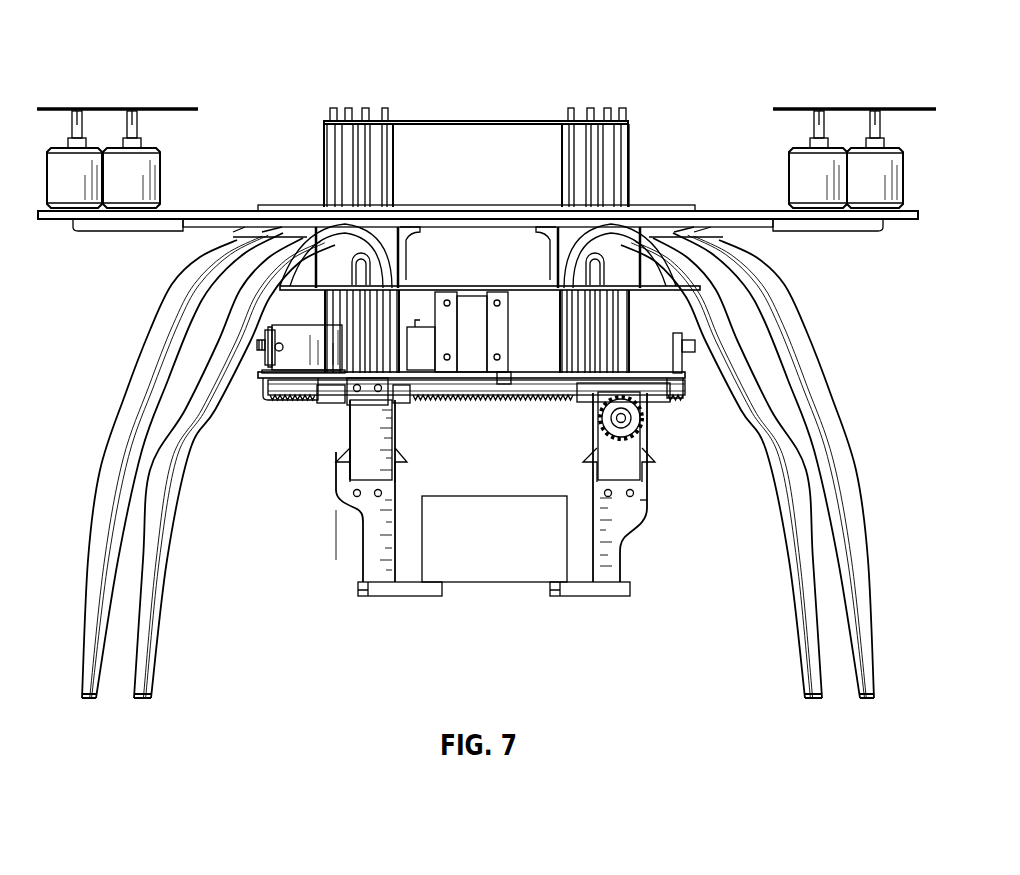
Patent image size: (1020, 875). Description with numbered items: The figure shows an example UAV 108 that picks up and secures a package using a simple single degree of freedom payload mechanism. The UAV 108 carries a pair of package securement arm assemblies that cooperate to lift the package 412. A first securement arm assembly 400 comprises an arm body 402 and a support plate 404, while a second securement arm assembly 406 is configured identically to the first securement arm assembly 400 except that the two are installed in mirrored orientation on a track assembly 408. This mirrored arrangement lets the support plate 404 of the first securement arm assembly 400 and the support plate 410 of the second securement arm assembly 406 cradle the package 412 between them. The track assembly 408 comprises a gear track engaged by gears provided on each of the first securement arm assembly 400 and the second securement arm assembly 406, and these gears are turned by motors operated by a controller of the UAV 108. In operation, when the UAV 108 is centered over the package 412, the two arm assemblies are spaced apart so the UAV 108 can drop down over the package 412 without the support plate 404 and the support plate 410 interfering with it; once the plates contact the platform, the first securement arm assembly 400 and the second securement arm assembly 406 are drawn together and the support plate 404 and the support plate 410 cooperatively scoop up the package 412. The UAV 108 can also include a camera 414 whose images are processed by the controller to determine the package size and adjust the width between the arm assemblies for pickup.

The UAV 108 is at (194, 48).
The first securement arm assembly 400 is at (667, 641).
The arm body 402 is at (625, 512).
The support plate 404 is at (603, 590).
The second securement arm assembly 406 is at (331, 641).
The track assembly 408 is at (293, 402).
The support plate 410 is at (398, 596).
The package 412 is at (513, 556).
The camera 414 is at (430, 327).